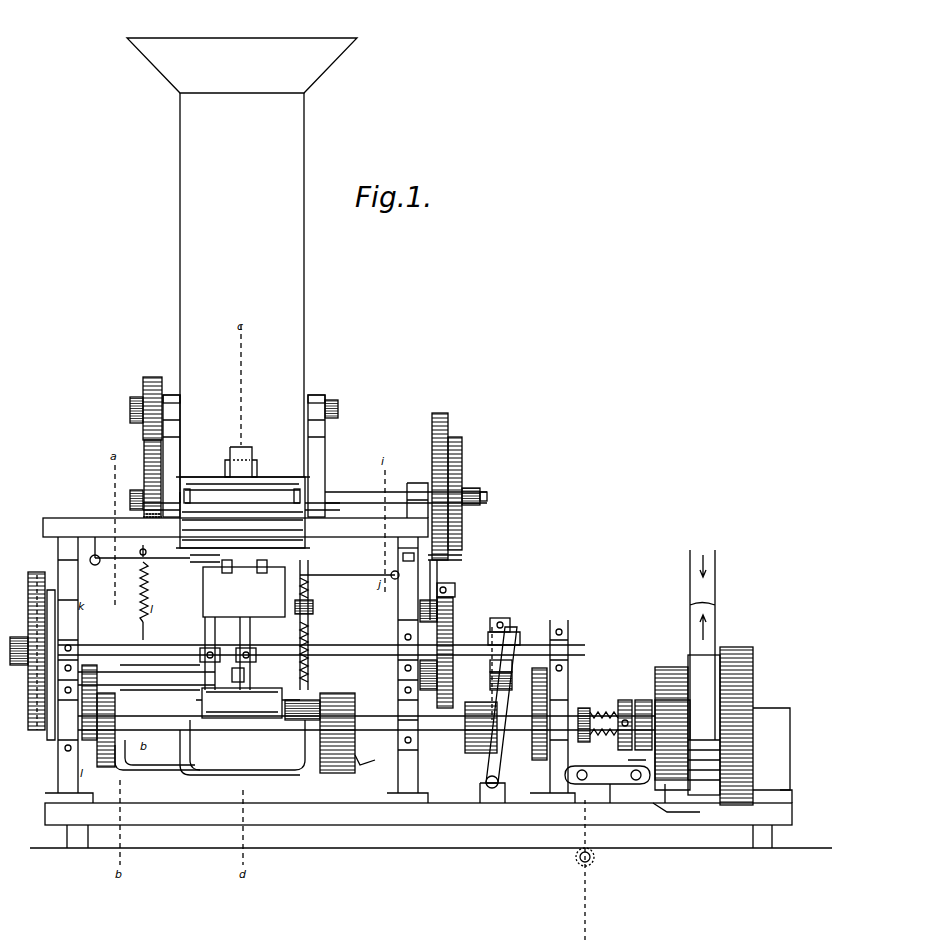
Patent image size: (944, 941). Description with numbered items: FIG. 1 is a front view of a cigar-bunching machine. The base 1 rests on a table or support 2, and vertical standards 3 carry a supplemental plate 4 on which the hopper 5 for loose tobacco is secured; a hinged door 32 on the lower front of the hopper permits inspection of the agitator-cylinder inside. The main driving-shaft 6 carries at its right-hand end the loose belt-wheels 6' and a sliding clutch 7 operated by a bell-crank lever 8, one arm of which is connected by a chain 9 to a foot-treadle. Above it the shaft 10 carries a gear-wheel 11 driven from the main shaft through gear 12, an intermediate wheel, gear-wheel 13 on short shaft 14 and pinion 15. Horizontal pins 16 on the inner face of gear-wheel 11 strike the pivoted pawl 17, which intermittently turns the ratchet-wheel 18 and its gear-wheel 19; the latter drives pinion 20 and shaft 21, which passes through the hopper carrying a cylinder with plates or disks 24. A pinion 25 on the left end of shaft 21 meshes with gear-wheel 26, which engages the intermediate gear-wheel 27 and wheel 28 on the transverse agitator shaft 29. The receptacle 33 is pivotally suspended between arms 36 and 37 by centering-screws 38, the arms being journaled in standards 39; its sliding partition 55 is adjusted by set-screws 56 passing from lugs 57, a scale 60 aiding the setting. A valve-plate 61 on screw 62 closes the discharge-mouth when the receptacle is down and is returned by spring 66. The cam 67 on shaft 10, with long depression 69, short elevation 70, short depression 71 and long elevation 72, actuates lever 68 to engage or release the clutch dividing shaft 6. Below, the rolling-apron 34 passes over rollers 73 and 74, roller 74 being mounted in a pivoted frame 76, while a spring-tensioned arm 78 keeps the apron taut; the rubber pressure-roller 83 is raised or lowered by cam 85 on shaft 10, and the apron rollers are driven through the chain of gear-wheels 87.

The base 1 is at (418, 807).
The table or support 2 is at (431, 845).
The vertical standards 3 is at (310, 670).
The supplemental plate 4 is at (235, 510).
The hopper 5 is at (242, 257).
The main driving-shaft 6 is at (366, 720).
The loose belt-wheels 6' is at (722, 677).
The sliding clutch 7 is at (667, 737).
The bell-crank lever 8 is at (615, 781).
The chain 9 is at (40, 607).
The shaft 10 is at (321, 642).
The gear-wheel 11 is at (453, 652).
The gear 12 is at (547, 742).
The gear-wheel 13 is at (568, 687).
The short shaft 14 is at (499, 716).
The pinion 15 is at (467, 684).
The horizontal pins 16 is at (404, 666).
The pivoted pawl 17 is at (432, 467).
The ratchet-wheel 18 is at (447, 560).
The gear-wheel 19 is at (463, 493).
The pinion 20 is at (470, 483).
The shaft 21 is at (333, 491).
The plates or disks 24 is at (428, 571).
The pinion 25 is at (140, 490).
The gear-wheel 26 is at (143, 514).
The intermediate gear-wheel 27 is at (144, 473).
The wheel 28 is at (143, 382).
The transverse shaft 29 is at (172, 395).
The hinged door 32 is at (243, 512).
The receptacle 33 is at (453, 583).
The rolling-apron 34 is at (248, 703).
The arm 36 is at (197, 566).
The arm 37 is at (305, 557).
The centering-screws 38 is at (288, 572).
The standards 39 is at (220, 653).
The partition 55 is at (192, 639).
The set-screws 56 is at (247, 625).
The lugs 57 is at (246, 572).
The scale 60 is at (246, 576).
The valve-plate 61 is at (151, 591).
The screw 62 is at (196, 564).
The spring 66 is at (140, 555).
The cam 67 is at (494, 665).
The lever 68 is at (496, 715).
The long depression 69 is at (494, 624).
The short elevation 70 is at (504, 645).
The short depression 71 is at (495, 680).
The long elevation 72 is at (500, 693).
The roller 73 is at (196, 695).
The roller 74 is at (300, 714).
The pivotally-secured frame 76 is at (226, 719).
The pivotally-secured arm 78 is at (210, 747).
The rubber pressure-roller 83 is at (255, 672).
The cam 85 is at (47, 741).
The chain of gear-wheels 87 is at (335, 775).